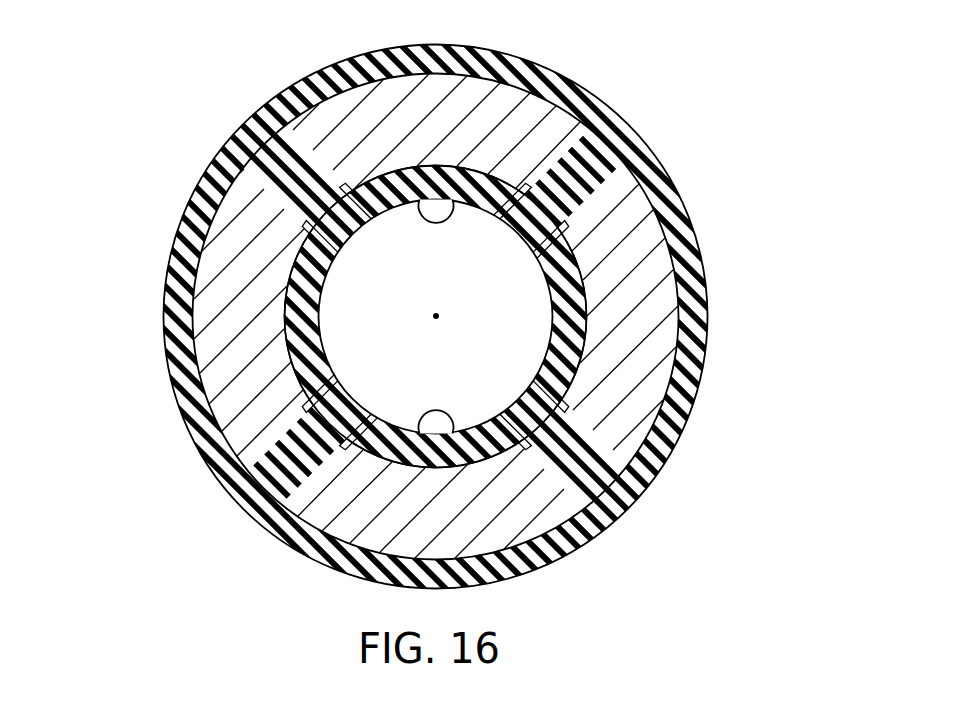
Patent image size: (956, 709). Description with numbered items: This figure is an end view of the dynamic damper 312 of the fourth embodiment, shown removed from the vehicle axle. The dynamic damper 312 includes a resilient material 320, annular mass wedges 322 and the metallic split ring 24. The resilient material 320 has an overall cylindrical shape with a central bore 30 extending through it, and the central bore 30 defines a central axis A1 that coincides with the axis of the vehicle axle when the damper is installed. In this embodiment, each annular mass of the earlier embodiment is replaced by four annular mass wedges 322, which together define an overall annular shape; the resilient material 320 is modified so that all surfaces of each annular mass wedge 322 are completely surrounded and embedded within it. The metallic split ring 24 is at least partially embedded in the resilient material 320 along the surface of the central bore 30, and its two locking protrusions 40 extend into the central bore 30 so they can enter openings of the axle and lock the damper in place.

The dynamic damper 312 is at (211, 93).
The resilient material 320 is at (610, 133).
The annular mass wedges 322 is at (493, 107).
The central bore 30 is at (365, 407).
The metallic split ring 24 is at (432, 209).
The locking protrusions 40 is at (444, 214).
The central axis A1 is at (437, 315).